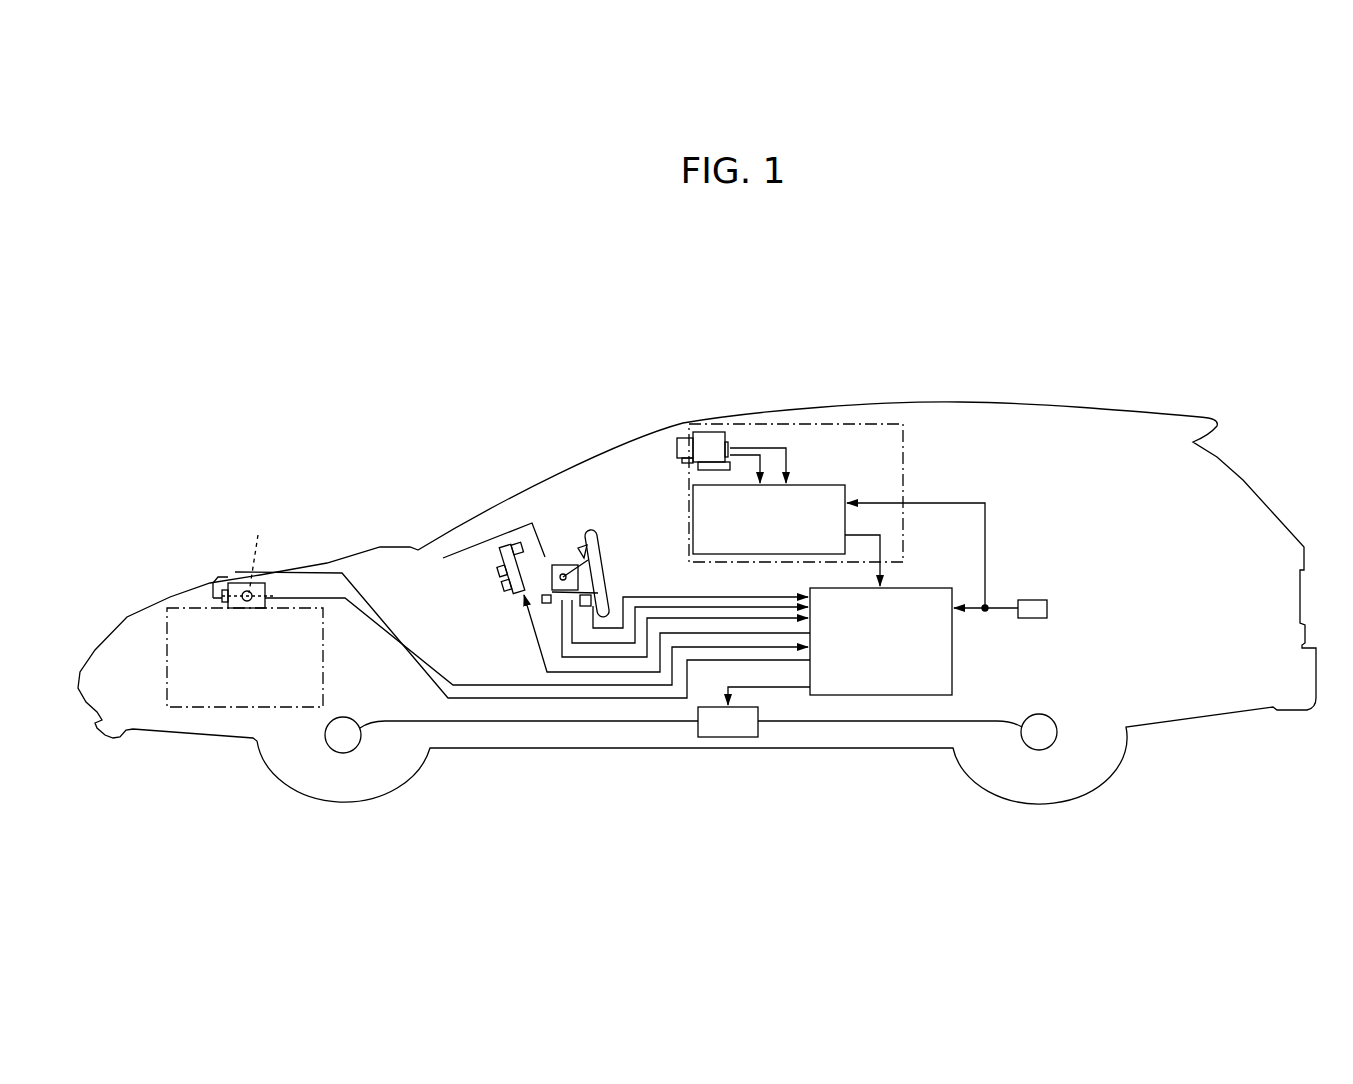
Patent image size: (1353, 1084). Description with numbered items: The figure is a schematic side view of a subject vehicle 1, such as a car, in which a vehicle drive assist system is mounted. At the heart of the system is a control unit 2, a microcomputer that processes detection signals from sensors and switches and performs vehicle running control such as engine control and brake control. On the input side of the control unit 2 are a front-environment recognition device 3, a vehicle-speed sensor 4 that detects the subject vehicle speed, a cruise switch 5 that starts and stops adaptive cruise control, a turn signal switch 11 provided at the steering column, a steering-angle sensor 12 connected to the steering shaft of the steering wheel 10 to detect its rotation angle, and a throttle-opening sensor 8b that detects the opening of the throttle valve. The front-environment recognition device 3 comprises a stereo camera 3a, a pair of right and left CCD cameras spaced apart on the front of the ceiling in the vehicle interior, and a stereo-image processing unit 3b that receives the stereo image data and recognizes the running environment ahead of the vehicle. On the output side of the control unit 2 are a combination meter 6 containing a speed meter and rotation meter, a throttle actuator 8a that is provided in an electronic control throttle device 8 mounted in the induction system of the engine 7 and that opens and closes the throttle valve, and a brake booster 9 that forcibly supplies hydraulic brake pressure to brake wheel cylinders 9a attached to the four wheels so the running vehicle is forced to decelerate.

The subject vehicle 1 is at (1033, 392).
The control unit 2 is at (917, 588).
The front-environment recognition device 3 is at (824, 422).
The stereo camera 3a is at (704, 440).
The stereo-image processing unit 3b is at (808, 485).
The vehicle-speed sensor 4 is at (1047, 608).
The cruise switch 5 is at (563, 573).
The combination meter 6 is at (503, 545).
The engine 7 is at (323, 657).
The electronic control throttle device 8 is at (231, 582).
The throttle actuator 8a is at (258, 552).
The throttle-opening sensor 8b is at (222, 598).
The brake booster 9 is at (713, 704).
The brake wheel cylinders 9a is at (340, 753).
The steering wheel 10 is at (595, 540).
The turn signal switch 11 is at (578, 605).
The steering-angle sensor 12 is at (545, 602).